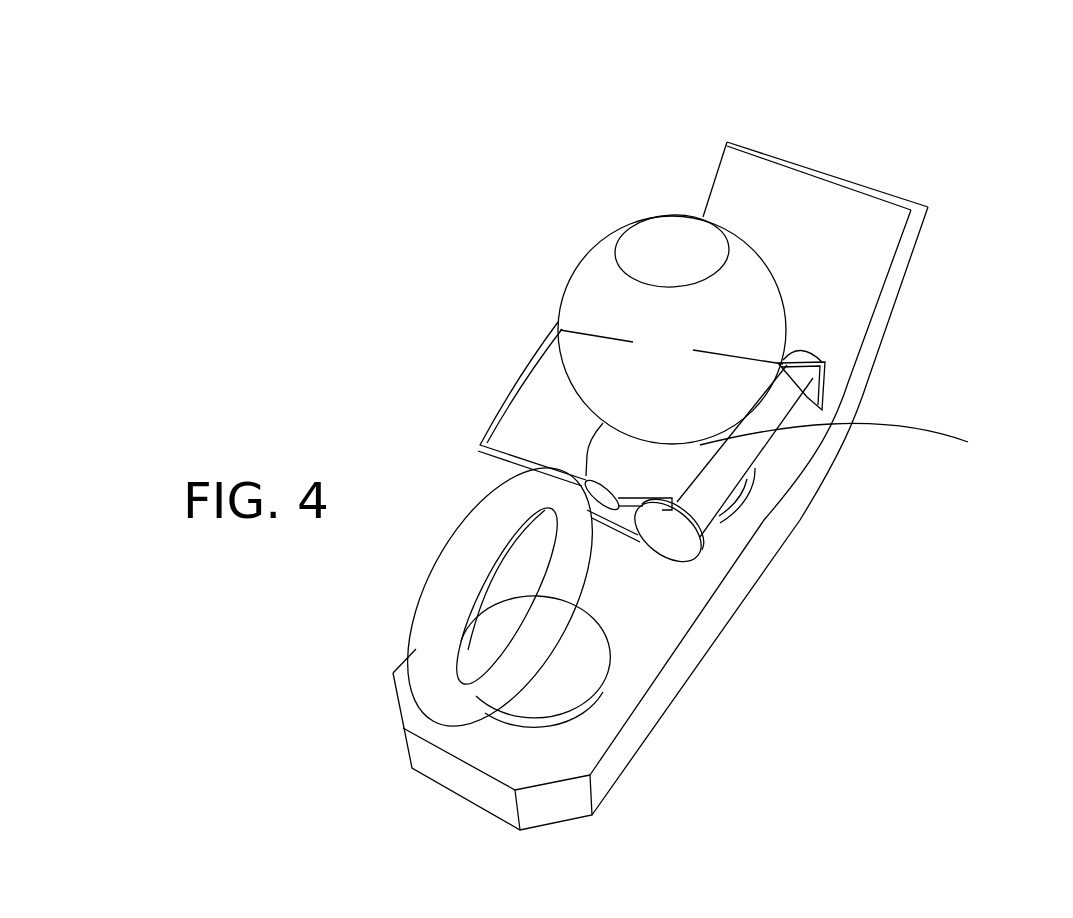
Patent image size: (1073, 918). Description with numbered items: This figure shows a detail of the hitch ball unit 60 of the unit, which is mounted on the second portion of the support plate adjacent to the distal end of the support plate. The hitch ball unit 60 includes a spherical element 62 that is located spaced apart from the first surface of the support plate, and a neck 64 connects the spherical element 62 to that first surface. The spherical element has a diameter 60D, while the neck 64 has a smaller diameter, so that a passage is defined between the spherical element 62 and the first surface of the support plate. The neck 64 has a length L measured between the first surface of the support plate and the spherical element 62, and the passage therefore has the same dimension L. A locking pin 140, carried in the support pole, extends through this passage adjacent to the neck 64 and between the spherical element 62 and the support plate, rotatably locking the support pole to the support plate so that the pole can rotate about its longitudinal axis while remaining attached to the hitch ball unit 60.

The hitch ball unit 60 is at (775, 290).
The diameter of the spherical element 60D is at (671, 350).
The spherical element 62 is at (685, 245).
The neck 64 is at (630, 447).
The locking pin 140 is at (732, 475).
The length of the neck L is at (841, 440).